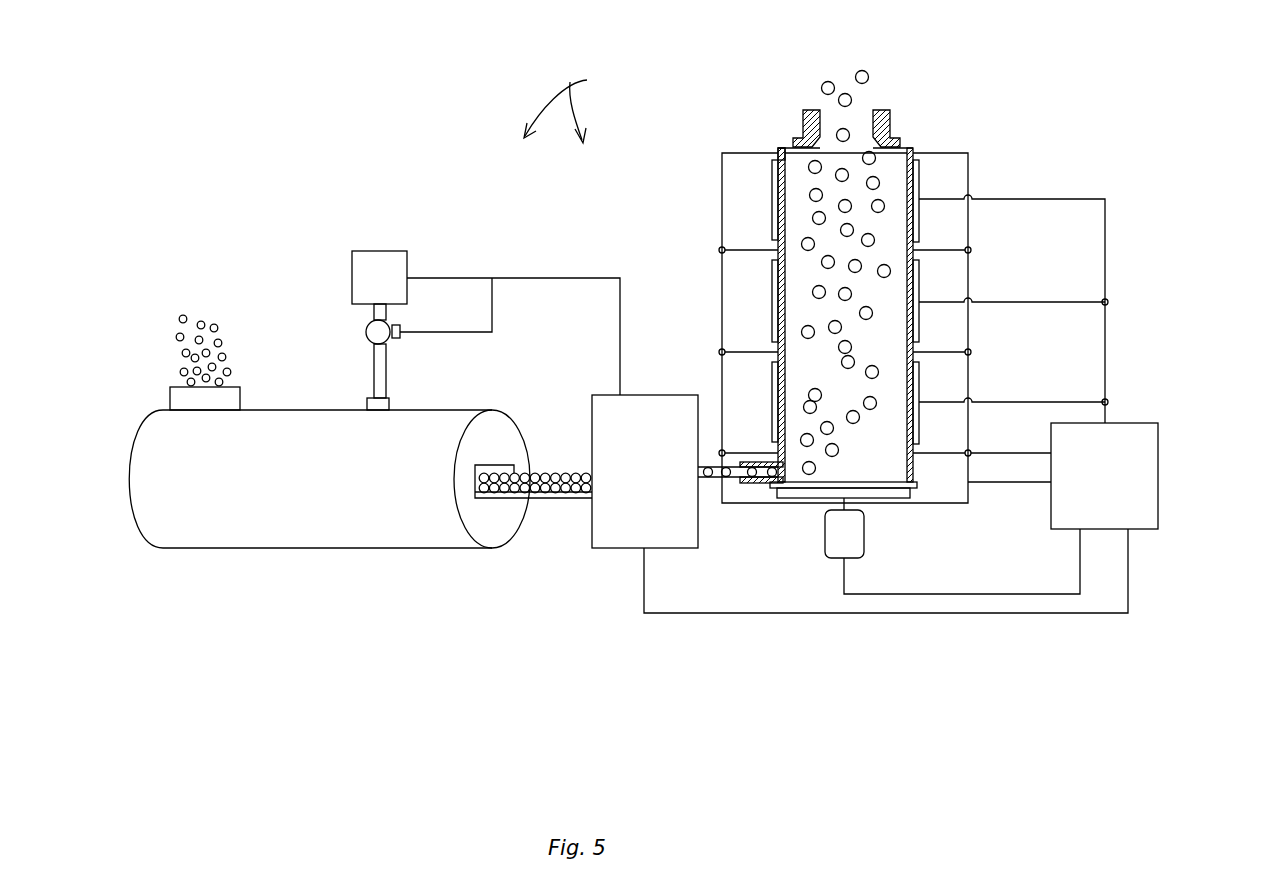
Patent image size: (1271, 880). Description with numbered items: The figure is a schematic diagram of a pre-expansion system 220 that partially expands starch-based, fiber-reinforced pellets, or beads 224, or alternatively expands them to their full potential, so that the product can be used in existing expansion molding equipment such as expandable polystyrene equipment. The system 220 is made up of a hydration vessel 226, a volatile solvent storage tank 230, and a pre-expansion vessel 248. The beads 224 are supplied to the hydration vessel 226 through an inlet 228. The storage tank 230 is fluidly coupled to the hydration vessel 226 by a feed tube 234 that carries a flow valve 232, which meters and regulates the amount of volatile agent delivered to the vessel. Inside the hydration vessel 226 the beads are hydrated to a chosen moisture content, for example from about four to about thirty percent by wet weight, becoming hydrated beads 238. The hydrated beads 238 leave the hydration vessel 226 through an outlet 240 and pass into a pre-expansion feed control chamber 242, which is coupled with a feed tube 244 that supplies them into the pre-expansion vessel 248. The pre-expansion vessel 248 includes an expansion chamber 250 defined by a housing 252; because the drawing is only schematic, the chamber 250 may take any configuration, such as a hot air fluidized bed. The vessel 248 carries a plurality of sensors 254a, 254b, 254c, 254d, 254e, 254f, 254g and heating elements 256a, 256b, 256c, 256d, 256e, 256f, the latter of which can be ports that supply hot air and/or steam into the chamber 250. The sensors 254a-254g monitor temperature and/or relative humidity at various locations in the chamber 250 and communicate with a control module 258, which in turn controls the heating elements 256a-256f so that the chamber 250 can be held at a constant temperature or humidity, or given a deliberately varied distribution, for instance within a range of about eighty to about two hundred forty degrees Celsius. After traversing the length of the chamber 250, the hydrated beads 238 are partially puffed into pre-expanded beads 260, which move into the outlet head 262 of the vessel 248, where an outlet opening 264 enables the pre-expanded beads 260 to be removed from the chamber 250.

The pre-expansion system 220 is at (578, 107).
The beads 224 is at (202, 318).
The hydration vessel 226 is at (203, 530).
The inlet 228 is at (170, 397).
The volatile solvent storage tank 230 is at (370, 260).
The flow valve 232 is at (366, 330).
The feed tube 234 is at (374, 370).
The hydrated beads 238 is at (495, 488).
The outlet 240 is at (478, 468).
The pre-expansion feed control chamber 242 is at (665, 532).
The feed tube 244 is at (703, 478).
The pre-expansion vessel 248 is at (793, 490).
The expansion chamber 250 is at (893, 173).
The housing 252 is at (778, 150).
The sensor 254a is at (910, 455).
The sensor 254b is at (776, 453).
The sensor 254c is at (914, 352).
The sensor 254d is at (776, 351).
The sensor 254e is at (915, 249).
The sensor 254f is at (776, 249).
The sensor 254g is at (774, 156).
The heating element 256a is at (920, 391).
The heating element 256b is at (772, 402).
The heating element 256c is at (920, 288).
The heating element 256d is at (772, 300).
The heating element 256e is at (920, 182).
The heating element 256f is at (772, 200).
The control module 258 is at (1138, 507).
The pre-expanded beads 260 is at (853, 228).
The outlet head 262 is at (813, 110).
The outlet opening 264 is at (856, 110).